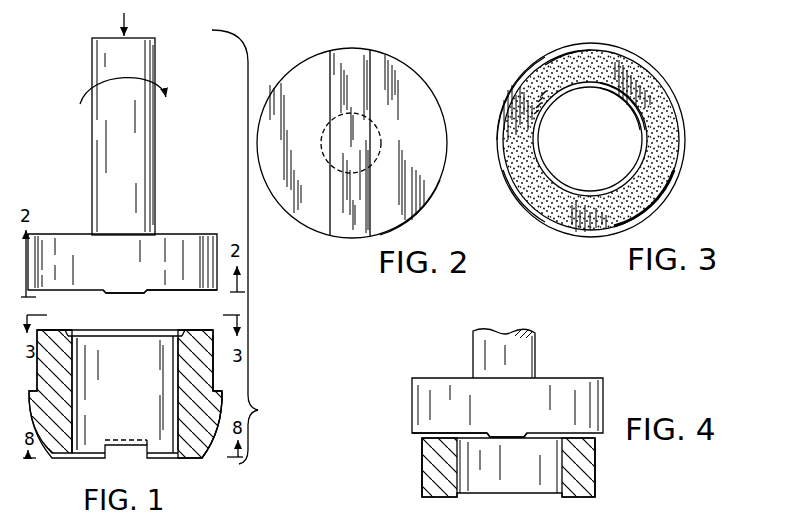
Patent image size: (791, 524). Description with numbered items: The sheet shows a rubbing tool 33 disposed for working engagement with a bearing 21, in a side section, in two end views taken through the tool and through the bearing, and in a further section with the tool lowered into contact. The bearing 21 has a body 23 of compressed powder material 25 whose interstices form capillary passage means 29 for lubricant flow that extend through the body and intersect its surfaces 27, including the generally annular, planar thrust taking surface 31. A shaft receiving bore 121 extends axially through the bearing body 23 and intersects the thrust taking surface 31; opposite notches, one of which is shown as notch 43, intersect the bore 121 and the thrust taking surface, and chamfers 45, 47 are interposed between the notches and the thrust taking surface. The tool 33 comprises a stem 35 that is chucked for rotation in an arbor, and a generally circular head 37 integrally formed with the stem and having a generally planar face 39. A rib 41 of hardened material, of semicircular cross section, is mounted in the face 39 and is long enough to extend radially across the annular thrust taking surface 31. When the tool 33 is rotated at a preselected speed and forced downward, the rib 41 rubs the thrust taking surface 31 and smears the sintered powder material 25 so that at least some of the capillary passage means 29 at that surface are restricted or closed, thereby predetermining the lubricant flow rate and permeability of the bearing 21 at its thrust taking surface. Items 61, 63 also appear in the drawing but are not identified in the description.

In FIG. 1, the bearing 21 is at (135, 381).
In FIG. 3, the bearing 21 is at (634, 43).
In FIG. 4, the bearing 21 is at (529, 476).
In FIG. 1, the bearing body 23 is at (216, 370).
In FIG. 3, the bearing body 23 is at (545, 58).
In FIG. 4, the bearing body 23 is at (422, 487).
In FIG. 1, the compressed powder material 25 is at (220, 382).
In FIG. 3, the compressed powder material 25 is at (643, 80).
In FIG. 4, the compressed powder material 25 is at (422, 470).
In FIG. 1, the surfaces 27 is at (63, 310).
In FIG. 3, the surfaces 27 is at (655, 97).
In FIG. 4, the surfaces 27 is at (422, 452).
In FIG. 1, the capillary passage means 29 is at (217, 418).
In FIG. 3, the capillary passage means 29 is at (519, 197).
In FIG. 4, the capillary passage means 29 is at (593, 475).
In FIG. 1, the thrust taking surface 31 is at (198, 330).
In FIG. 3, the thrust taking surface 31 is at (570, 55).
In FIG. 4, the thrust taking surface 31 is at (432, 433).
In FIG. 1, the tool 33 is at (60, 97).
In FIG. 2, the tool 33 is at (394, 42).
In FIG. 4, the tool 33 is at (451, 346).
In FIG. 1, the stem 35 is at (148, 142).
In FIG. 2, the stem 35 is at (383, 135).
In FIG. 4, the stem 35 is at (512, 333).
In FIG. 1, the head 37 is at (188, 240).
In FIG. 2, the head 37 is at (438, 100).
In FIG. 4, the head 37 is at (577, 377).
In FIG. 1, the face 39 is at (175, 293).
In FIG. 2, the face 39 is at (423, 197).
In FIG. 4, the face 39 is at (593, 453).
In FIG. 1, the rib 41 is at (122, 294).
In FIG. 2, the rib 41 is at (350, 238).
In FIG. 4, the rib 41 is at (507, 433).
In FIG. 4, the notch 43 is at (604, 515).
In FIG. 4, the chamfer 45 is at (554, 520).
In FIG. 4, the chamfer 47 is at (654, 520).
In FIG. 1, the housing 61 is at (39, 519).
In FIG. 1, the housing opening 63 is at (292, 523).
In FIG. 1, the bore 121 is at (74, 424).